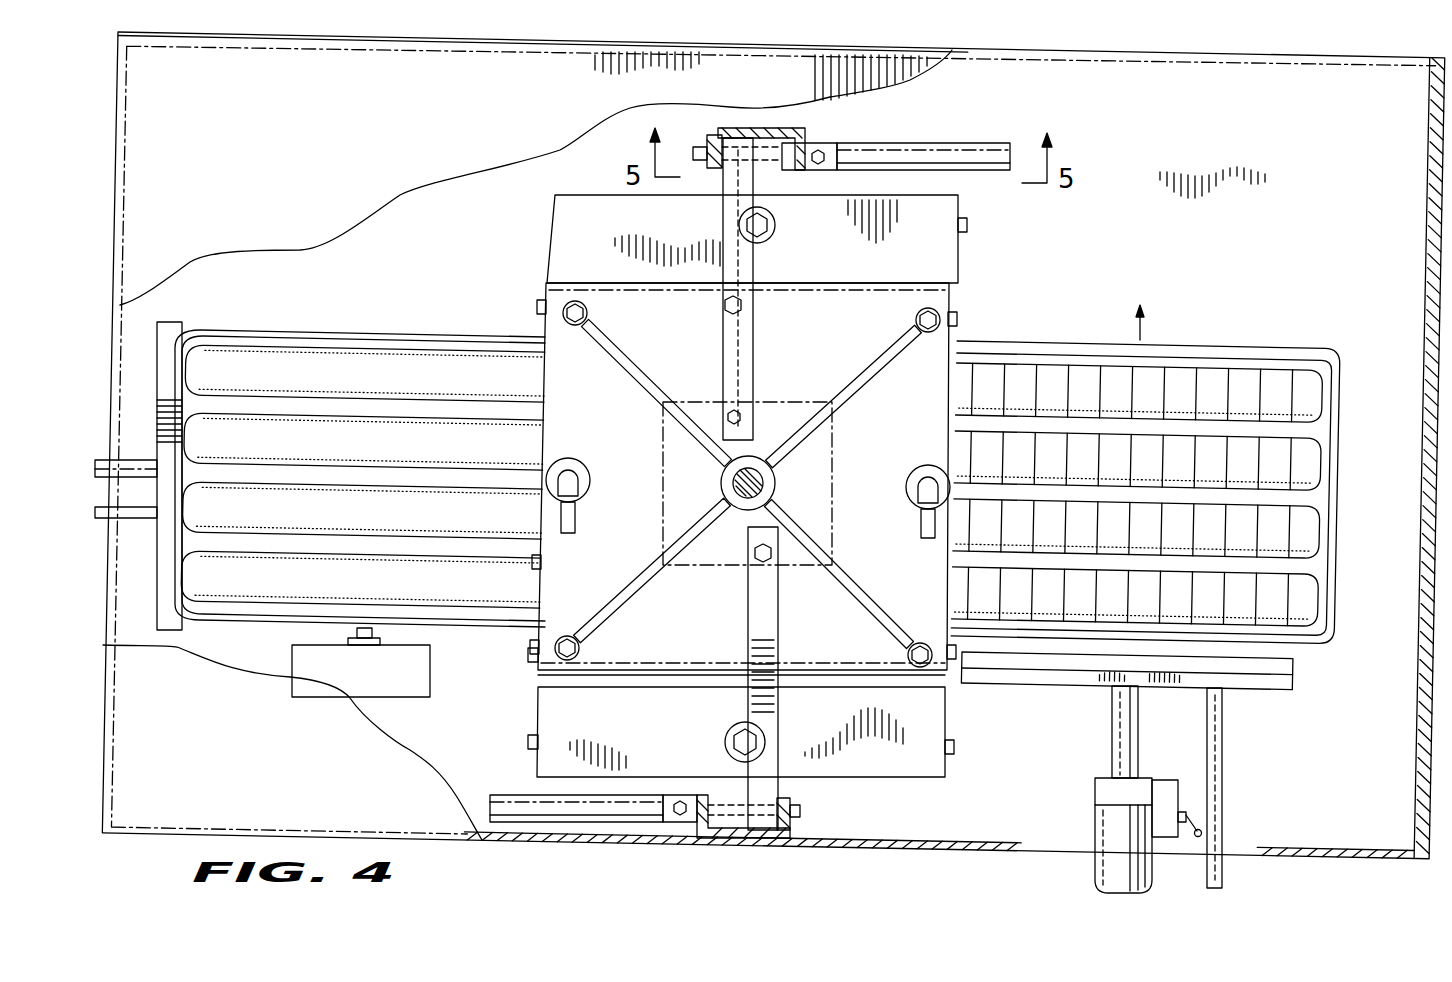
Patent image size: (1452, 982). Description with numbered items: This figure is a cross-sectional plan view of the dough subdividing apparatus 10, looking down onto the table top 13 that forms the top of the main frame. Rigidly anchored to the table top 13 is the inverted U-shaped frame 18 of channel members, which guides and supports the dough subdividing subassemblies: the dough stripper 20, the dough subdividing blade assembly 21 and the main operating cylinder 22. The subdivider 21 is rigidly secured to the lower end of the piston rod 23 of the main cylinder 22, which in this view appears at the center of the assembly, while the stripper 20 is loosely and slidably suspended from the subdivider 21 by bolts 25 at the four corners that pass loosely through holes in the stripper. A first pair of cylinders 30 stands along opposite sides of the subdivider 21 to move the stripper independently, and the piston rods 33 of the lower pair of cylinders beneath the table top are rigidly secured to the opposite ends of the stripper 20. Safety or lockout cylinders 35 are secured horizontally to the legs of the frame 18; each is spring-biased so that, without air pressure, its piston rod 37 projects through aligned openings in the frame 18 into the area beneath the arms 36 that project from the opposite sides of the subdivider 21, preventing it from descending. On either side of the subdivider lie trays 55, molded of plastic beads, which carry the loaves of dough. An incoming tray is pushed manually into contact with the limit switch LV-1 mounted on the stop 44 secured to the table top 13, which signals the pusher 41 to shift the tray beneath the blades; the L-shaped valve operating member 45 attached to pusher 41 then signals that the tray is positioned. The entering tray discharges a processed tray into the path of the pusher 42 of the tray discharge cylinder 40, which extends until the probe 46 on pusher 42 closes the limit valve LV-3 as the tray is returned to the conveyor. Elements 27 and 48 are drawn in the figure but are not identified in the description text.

The dough subdividing apparatus 10 is at (1204, 41).
The table top 13 is at (446, 270).
The inverted U-shaped frame 18 is at (756, 128).
The dough stripper 20 is at (545, 242).
The dough subdividing blade assembly 21 is at (876, 291).
The main operating cylinder 22 is at (833, 467).
The piston rod 23 is at (720, 483).
The bolts 25 is at (588, 311).
The roller 27 is at (418, 390).
The first pair of cylinders 30 is at (575, 460).
The piston rods 33 is at (776, 225).
The safety or lockout cylinders 35 is at (948, 143).
The arms 36 is at (753, 347).
The piston rod 37 is at (712, 148).
The tray discharge cylinder 40 is at (1095, 816).
The pusher 41 is at (172, 324).
The pusher 42 is at (1297, 672).
The stop 44 is at (432, 688).
The L-shaped valve operating member 45 is at (136, 520).
The probe 46 is at (1222, 772).
The table surface 48 is at (338, 141).
The tray 55 is at (348, 333).
The limit switch LV-1 is at (365, 627).
The limit valve LV-3 is at (1165, 780).